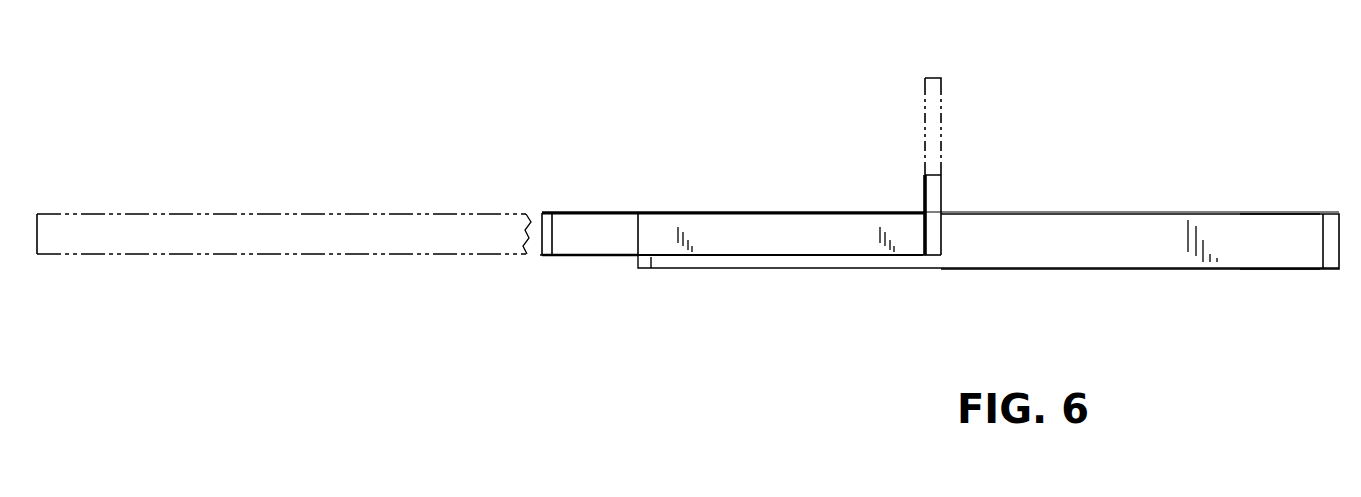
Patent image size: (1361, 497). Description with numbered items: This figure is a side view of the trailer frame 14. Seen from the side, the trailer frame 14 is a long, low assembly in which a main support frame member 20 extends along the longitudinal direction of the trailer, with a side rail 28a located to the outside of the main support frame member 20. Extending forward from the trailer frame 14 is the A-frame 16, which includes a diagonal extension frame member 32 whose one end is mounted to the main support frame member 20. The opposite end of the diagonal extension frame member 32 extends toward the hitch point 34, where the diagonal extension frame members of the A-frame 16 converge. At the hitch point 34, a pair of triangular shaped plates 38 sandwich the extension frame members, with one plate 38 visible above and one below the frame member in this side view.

The trailer frame 14 is at (786, 132).
The A-frame 16 is at (981, 210).
The main support frame member 20 is at (583, 242).
The side rail 28a is at (763, 235).
The diagonal extension frame member 32 is at (1025, 245).
The hitch point 34 is at (1317, 210).
The triangular shaped plate 38 is at (1268, 213).